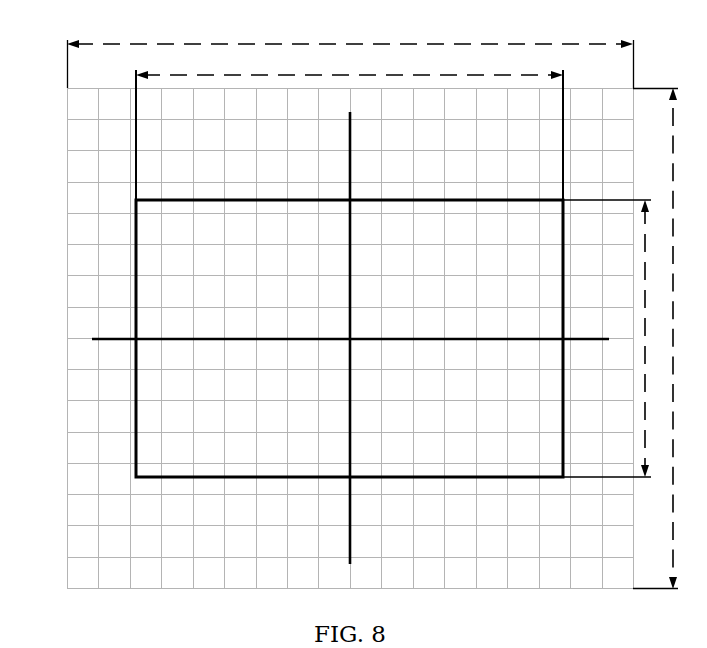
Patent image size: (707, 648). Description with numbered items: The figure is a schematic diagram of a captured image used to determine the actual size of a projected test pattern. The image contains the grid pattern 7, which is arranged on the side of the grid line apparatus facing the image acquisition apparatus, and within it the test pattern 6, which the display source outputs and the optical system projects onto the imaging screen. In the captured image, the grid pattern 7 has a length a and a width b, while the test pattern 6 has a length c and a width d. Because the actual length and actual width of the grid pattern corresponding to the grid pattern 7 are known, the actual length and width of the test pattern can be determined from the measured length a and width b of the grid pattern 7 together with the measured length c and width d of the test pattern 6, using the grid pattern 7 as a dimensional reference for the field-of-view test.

The grid pattern 7 is at (98, 168).
The test pattern 6 is at (134, 258).
The length of the grid pattern in the captured image a is at (350, 52).
The width of the grid pattern in the captured image b is at (662, 338).
The length of the test pattern in the captured image c is at (349, 123).
The width of the test pattern in the captured image d is at (616, 338).